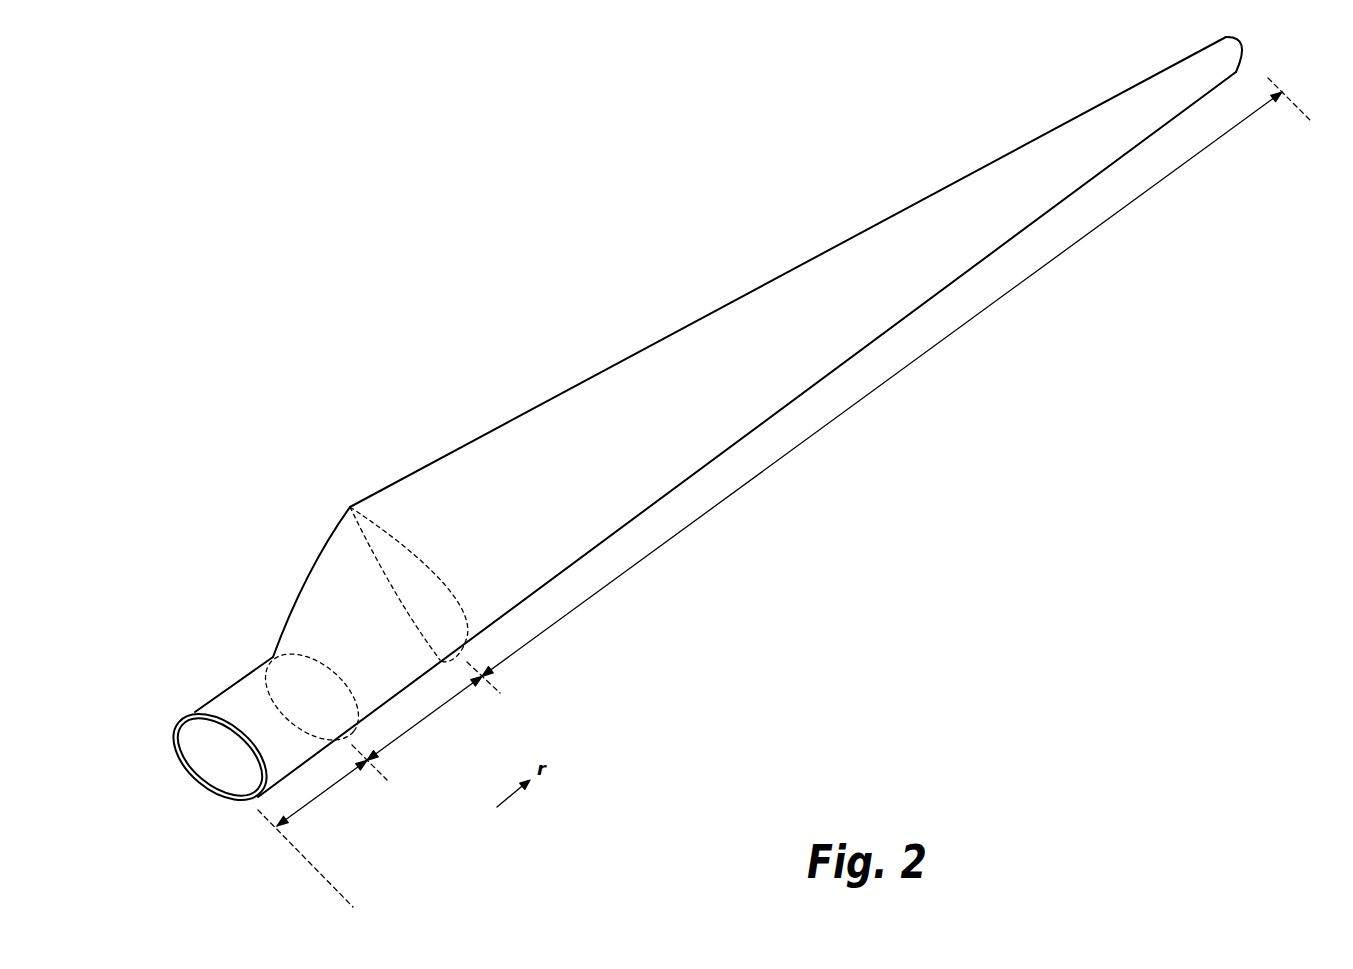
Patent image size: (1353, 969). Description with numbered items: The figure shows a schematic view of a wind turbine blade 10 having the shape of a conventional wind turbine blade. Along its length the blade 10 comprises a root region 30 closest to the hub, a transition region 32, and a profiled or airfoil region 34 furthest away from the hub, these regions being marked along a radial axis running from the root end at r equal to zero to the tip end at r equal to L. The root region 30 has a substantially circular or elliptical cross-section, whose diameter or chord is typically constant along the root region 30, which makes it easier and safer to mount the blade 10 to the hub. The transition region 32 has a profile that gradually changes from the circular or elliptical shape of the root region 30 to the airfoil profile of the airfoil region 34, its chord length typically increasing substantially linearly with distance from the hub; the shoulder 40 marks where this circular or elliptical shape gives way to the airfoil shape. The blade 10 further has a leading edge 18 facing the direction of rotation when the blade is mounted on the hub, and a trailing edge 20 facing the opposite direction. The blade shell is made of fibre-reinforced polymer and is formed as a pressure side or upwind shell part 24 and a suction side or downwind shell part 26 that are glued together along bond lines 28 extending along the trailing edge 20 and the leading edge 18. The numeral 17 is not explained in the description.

The wind turbine blade 10 is at (522, 280).
The root 17 is at (208, 742).
The leading edge 18 is at (920, 308).
The trailing edge 20 is at (780, 270).
The pressure side or upwind shell part 24 is at (212, 705).
The suction side or downwind shell part 26 is at (200, 803).
The bond lines 28 is at (206, 708).
The root region 30 is at (330, 787).
The transition region 32 is at (428, 717).
The airfoil region 34 is at (802, 443).
The shoulder 40 is at (350, 507).